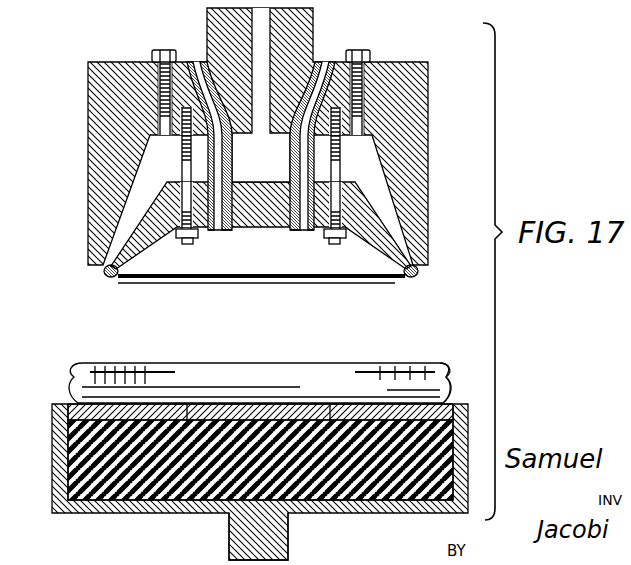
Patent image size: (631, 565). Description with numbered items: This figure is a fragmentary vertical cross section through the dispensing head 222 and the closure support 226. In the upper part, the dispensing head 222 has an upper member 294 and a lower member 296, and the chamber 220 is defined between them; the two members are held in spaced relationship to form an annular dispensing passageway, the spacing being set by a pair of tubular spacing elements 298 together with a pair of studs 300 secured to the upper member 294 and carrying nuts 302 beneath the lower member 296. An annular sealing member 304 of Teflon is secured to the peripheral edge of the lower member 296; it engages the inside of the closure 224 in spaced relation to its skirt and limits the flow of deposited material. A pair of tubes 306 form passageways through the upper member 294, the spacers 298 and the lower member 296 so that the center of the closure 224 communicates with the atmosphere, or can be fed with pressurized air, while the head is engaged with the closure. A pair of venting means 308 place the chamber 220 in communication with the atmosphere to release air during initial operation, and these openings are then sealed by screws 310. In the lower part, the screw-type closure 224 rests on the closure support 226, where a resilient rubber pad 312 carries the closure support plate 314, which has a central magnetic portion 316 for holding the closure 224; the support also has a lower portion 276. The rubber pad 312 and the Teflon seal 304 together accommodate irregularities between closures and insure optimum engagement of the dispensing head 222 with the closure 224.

The chamber 220 is at (370, 183).
The dispensing head 222 is at (249, 167).
The screw-type closure 224 is at (445, 386).
The closure support 226 is at (42, 483).
The bottom protrusion 276 is at (278, 547).
The upper member 294 is at (88, 105).
The lower member 296 is at (268, 228).
The tubular spacing elements 298 is at (284, 166).
The studs 300 is at (183, 165).
The nuts 302 is at (178, 240).
The annular sealing member 304 is at (108, 279).
The tubes 306 is at (195, 62).
The venting means 308 is at (158, 125).
The screws 310 is at (157, 82).
The rubber pad 312 is at (143, 495).
The closure support plate 314 is at (447, 432).
The central magnetic portion 316 is at (258, 400).